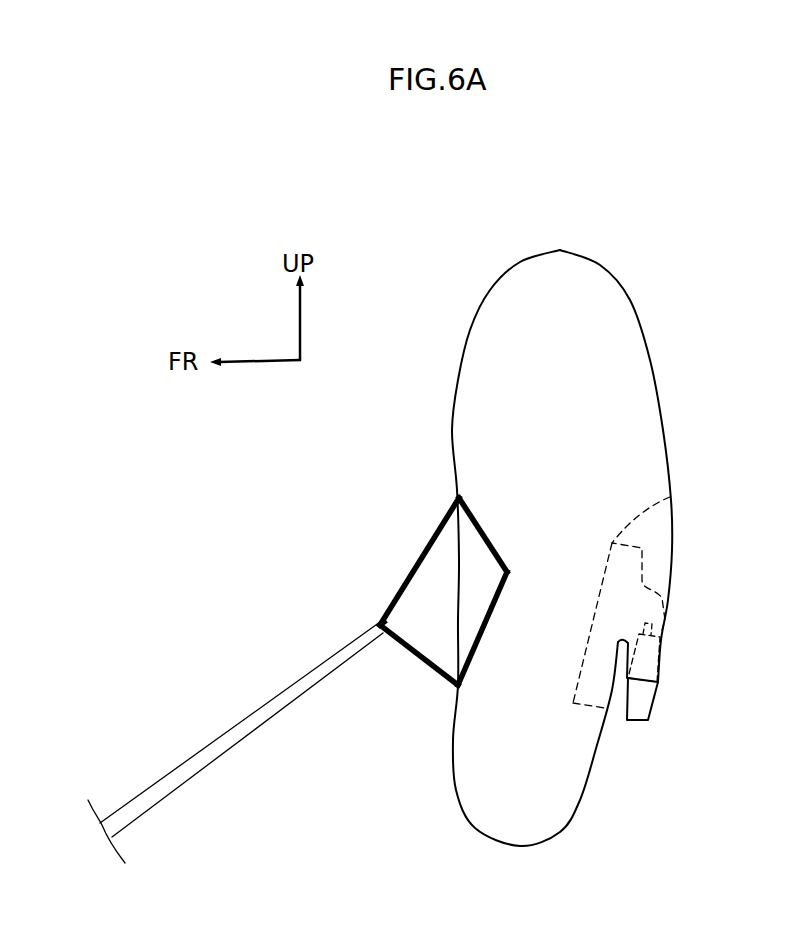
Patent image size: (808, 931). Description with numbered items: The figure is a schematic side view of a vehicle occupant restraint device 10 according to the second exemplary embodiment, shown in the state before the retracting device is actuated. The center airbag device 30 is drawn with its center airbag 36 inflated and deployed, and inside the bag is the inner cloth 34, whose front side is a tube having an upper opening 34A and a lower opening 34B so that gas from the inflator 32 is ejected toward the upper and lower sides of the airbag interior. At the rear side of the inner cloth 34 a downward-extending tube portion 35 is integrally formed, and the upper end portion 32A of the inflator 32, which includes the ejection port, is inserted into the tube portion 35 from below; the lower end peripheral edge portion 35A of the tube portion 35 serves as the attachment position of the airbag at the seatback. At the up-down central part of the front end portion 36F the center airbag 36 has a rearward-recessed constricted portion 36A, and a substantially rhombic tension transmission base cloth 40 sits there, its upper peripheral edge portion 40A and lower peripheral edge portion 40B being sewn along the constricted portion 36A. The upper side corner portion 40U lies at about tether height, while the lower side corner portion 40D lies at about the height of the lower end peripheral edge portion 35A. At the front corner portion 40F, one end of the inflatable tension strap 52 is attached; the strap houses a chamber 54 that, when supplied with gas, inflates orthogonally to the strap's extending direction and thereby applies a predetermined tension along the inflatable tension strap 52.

The vehicle occupant restraint device 10 is at (463, 303).
The center airbag device 30 is at (665, 323).
The inflator 32 is at (650, 727).
The upper end portion 32A is at (655, 627).
The inner cloth 34 is at (650, 590).
The upper opening 34A is at (670, 497).
The lower opening 34B is at (575, 705).
The tube portion 35 is at (667, 660).
The lower end peripheral edge portion 35A is at (655, 683).
The center airbag 36 is at (558, 248).
The front end portion 36F is at (453, 403).
The constricted portion 36A is at (488, 575).
The tension transmission base cloth 40 is at (423, 597).
The upper peripheral edge portion 40A is at (493, 542).
The lower peripheral edge portion 40B is at (477, 647).
The lower side corner portion 40D is at (458, 687).
The upper side corner portion 40U is at (460, 497).
The corner portion 40F is at (380, 625).
The inflatable tension strap 52 is at (273, 695).
The chamber 54 is at (227, 750).